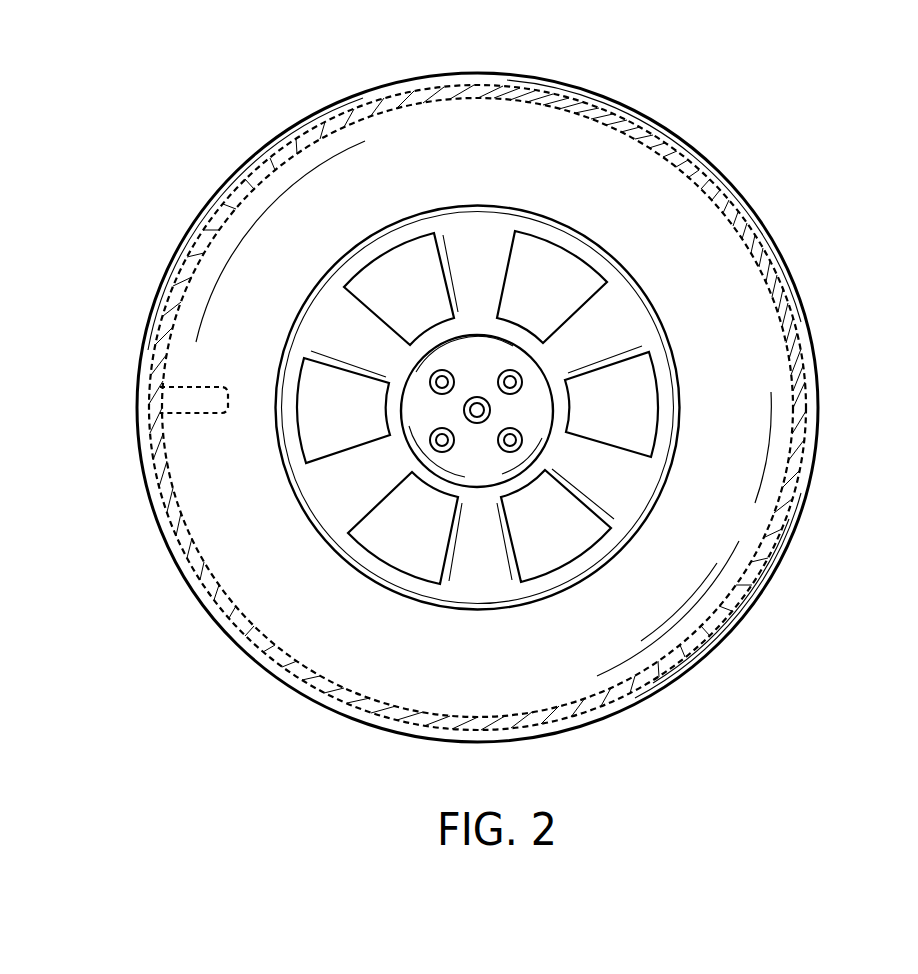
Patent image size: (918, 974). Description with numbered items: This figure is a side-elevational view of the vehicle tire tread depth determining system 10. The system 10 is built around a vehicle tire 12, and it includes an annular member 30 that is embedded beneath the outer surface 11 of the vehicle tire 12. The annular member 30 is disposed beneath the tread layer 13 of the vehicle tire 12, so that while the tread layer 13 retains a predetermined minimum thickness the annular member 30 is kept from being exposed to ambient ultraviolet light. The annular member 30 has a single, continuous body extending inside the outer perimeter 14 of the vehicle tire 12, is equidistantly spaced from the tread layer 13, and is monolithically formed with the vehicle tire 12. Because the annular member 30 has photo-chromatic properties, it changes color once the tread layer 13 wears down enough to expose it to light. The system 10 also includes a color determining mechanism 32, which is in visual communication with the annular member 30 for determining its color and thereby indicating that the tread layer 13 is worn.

The vehicle tire tread depth determining system 10 is at (205, 95).
The outer surface 11 is at (137, 402).
The vehicle tire 12 is at (205, 273).
The tread layer 13 is at (138, 440).
The outer perimeter 14 is at (153, 517).
The annular member 30 is at (173, 400).
The color determining mechanism 32 is at (193, 570).